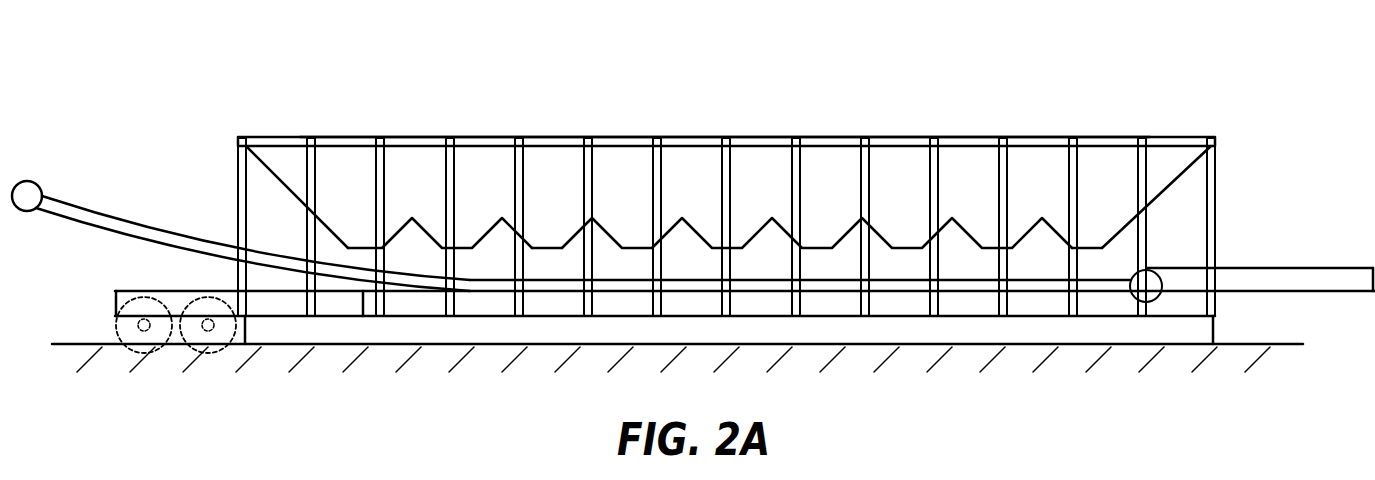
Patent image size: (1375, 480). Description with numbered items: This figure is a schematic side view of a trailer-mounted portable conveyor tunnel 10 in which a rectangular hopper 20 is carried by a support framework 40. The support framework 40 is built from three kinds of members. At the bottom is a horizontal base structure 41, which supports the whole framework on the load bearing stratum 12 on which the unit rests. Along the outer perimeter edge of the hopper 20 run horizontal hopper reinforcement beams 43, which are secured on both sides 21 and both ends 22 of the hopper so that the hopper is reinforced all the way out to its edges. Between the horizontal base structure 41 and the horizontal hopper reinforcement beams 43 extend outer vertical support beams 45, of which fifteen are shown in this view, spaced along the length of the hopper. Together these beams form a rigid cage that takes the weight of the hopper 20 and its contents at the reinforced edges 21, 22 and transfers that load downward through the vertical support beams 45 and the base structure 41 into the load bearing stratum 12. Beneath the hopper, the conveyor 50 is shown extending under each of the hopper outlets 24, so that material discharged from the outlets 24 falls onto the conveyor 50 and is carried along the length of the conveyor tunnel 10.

The trailer-mounted portable conveyor tunnel 10 is at (305, 86).
The load bearing stratum 12 is at (600, 378).
The rectangular hopper 20 is at (908, 168).
The sides of the hopper 21 is at (688, 136).
The ends of the hopper 22 is at (238, 138).
The hopper outlets 24 is at (545, 246).
The support framework 40 is at (200, 170).
The horizontal base structure 41 is at (918, 332).
The horizontal hopper reinforcement beams 43 is at (413, 137).
The outer vertical support beams 45 is at (318, 178).
The conveyor 50 is at (117, 217).